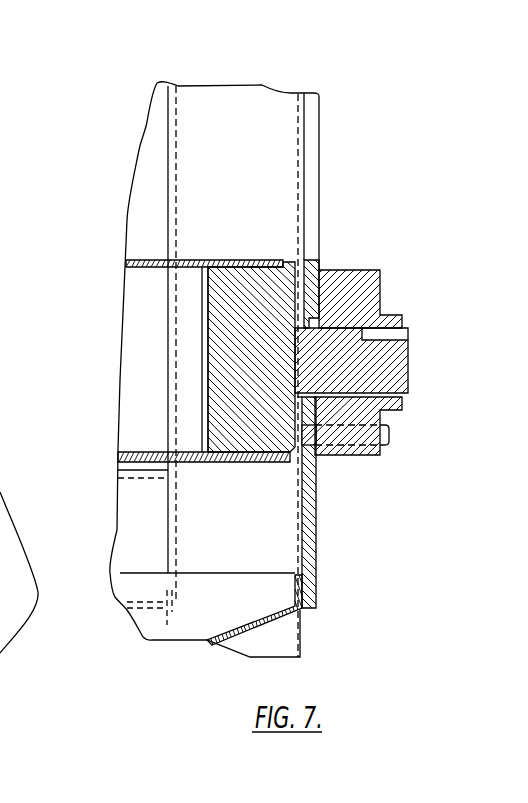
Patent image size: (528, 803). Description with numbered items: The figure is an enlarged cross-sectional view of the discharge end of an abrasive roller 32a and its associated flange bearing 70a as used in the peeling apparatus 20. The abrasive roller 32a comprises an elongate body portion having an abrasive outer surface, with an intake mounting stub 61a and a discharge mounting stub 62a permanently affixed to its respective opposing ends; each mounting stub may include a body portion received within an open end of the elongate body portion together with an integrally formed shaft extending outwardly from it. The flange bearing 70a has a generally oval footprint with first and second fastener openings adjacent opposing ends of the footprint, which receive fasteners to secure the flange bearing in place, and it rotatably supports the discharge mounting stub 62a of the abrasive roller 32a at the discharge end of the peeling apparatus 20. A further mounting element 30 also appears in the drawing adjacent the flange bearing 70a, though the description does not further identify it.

The peeling apparatus 20 is at (106, 111).
The abrasive roller 32a is at (146, 256).
The discharge mounting stub 62a is at (278, 262).
The flange bearing 70a is at (339, 290).
The mounting plate 30 is at (303, 625).
The intake mounting stub 61a is at (115, 489).